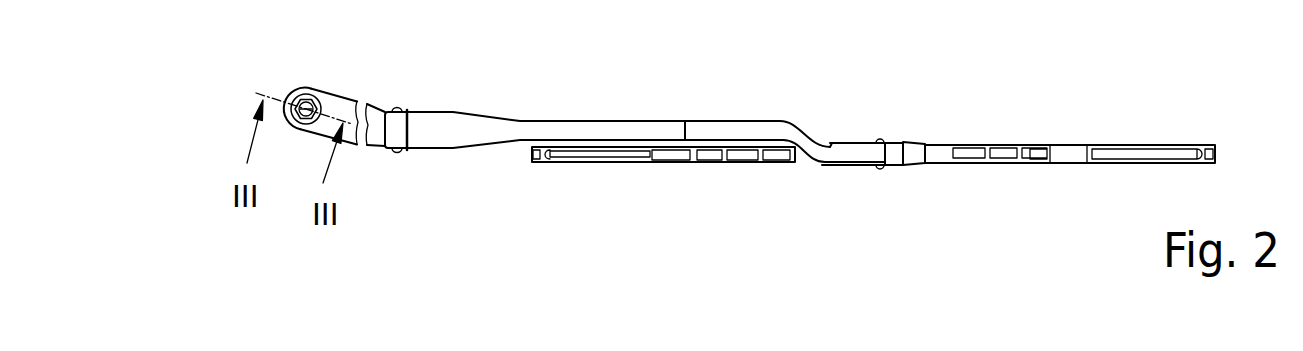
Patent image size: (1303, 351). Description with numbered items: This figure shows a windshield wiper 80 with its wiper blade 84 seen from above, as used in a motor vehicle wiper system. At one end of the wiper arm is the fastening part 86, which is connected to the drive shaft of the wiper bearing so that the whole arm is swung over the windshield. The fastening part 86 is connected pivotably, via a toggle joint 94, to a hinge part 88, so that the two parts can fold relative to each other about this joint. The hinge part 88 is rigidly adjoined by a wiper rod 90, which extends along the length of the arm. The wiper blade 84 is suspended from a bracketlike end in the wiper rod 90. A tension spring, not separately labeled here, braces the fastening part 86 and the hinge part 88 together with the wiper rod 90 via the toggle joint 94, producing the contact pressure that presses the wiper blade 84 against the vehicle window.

The windshield wiper 80 is at (875, 203).
The wiper blade 84 is at (588, 152).
The fastening part 86 is at (382, 132).
The hinge part 88 is at (465, 137).
The wiper rod 90 is at (795, 137).
The toggle joint 94 is at (397, 152).